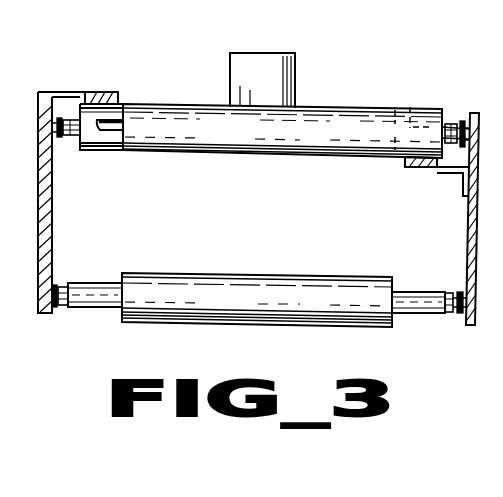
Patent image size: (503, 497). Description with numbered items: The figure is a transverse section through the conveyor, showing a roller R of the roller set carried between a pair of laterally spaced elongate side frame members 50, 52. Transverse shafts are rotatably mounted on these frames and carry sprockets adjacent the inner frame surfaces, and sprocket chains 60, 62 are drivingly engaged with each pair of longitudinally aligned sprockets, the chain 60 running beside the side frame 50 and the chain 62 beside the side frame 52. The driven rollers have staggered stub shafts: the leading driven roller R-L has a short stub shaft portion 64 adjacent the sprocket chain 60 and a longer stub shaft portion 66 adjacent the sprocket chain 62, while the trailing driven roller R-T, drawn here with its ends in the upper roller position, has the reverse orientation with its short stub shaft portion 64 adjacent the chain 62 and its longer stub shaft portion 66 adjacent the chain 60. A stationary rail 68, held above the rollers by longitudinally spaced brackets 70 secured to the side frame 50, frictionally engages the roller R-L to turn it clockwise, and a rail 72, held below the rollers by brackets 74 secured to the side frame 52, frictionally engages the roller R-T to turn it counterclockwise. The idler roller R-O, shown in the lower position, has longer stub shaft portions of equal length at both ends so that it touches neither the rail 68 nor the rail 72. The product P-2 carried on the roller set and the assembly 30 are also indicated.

The roller assembly 30 is at (431, 98).
The side frame member 50 is at (46, 207).
The side frame member 52 is at (467, 227).
The sprocket chain 60 is at (68, 140).
The sprocket chain 62 is at (480, 130).
The short stub shaft portion 64 is at (85, 102).
The longer stub shaft portion 66 is at (113, 131).
The stationary rail 68 is at (107, 93).
The brackets 70 is at (92, 92).
The rail 72 is at (405, 163).
The brackets 74 is at (440, 173).
The roller R is at (333, 102).
The trailing driven roller R-T is at (247, 137).
The idler roller R-O is at (250, 303).
The leading driven roller R-L is at (120, 107).
The plate P-2 is at (275, 83).